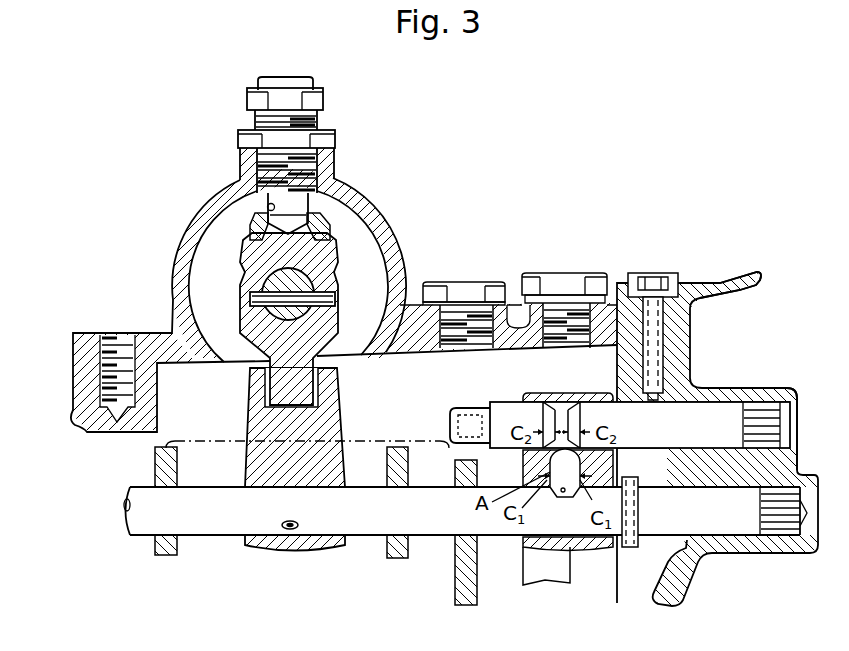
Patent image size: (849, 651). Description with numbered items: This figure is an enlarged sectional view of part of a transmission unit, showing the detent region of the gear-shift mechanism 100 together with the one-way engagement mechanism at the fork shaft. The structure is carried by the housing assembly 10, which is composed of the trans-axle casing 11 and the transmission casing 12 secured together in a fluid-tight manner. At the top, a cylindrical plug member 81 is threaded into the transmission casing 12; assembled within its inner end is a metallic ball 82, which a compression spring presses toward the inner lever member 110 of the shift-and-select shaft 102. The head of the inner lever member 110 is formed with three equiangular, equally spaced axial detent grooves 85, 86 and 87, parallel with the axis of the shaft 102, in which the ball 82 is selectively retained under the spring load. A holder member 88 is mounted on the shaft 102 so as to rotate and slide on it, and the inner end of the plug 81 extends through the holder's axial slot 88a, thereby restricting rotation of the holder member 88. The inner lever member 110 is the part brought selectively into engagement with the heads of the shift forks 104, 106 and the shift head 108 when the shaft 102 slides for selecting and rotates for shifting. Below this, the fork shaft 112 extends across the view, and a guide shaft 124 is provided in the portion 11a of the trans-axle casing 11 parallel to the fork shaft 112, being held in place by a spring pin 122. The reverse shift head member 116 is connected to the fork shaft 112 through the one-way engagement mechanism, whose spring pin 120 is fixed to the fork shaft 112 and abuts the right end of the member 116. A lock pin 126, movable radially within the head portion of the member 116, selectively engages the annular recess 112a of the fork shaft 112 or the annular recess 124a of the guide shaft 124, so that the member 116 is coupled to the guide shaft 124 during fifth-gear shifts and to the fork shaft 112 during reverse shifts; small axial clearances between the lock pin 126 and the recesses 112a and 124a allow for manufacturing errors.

The housing assembly 10 is at (612, 300).
The trans-axle casing 11 is at (730, 280).
The portion of the trans-axle casing 11a is at (763, 393).
The transmission casing 12 is at (176, 302).
The cylindrical plug member 81 is at (262, 160).
The metallic ball 82 is at (320, 264).
The axial detent groove 85 is at (327, 233).
The axial detent groove 86 is at (292, 215).
The axial detent groove 87 is at (252, 237).
The holder member 88 is at (245, 318).
The axial slot 88a is at (265, 205).
The gear-shift mechanism 100 is at (368, 370).
The shift-and-select shaft 102 is at (310, 290).
The shift fork 104 is at (460, 566).
The shift fork 106 is at (177, 547).
The shift head 108 is at (328, 424).
The inner lever member 110 is at (282, 388).
The fork shaft 112 is at (425, 529).
The annular recess 112a is at (567, 491).
The reverse shift head member 116 is at (553, 572).
The spring pin 120 is at (638, 545).
The spring pin 122 is at (667, 393).
The guide shaft 124 is at (680, 439).
The annular recess 124a is at (563, 402).
The lock pin 126 is at (556, 467).